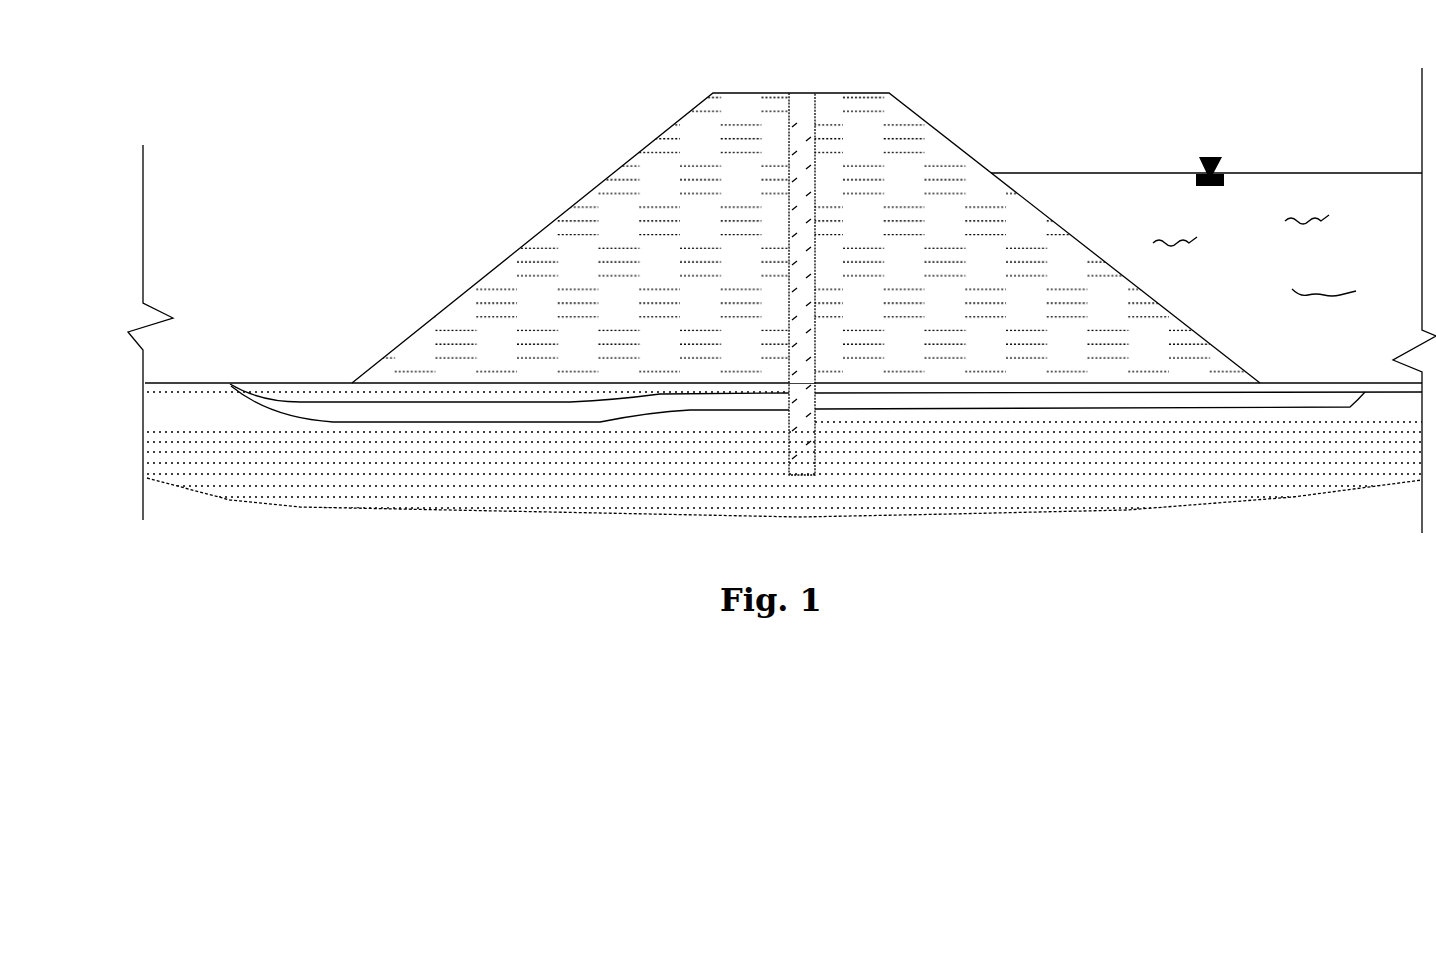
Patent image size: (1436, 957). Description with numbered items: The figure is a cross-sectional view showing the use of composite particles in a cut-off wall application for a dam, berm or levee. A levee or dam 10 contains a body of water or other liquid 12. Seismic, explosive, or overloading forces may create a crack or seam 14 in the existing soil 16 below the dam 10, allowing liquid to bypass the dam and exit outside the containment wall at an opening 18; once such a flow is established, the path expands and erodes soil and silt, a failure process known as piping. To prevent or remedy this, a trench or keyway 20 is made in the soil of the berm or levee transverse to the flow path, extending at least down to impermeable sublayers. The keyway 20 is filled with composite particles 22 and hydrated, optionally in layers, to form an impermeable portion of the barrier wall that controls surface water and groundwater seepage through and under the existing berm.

The levee or dam 10 is at (914, 128).
The body of water or other liquid 12 is at (1274, 188).
The crack or seam 14 is at (1043, 398).
The existing soil 16 is at (750, 467).
The opening 18 is at (235, 375).
The trench or keyway 20 is at (788, 229).
The composite particles 22 is at (798, 104).